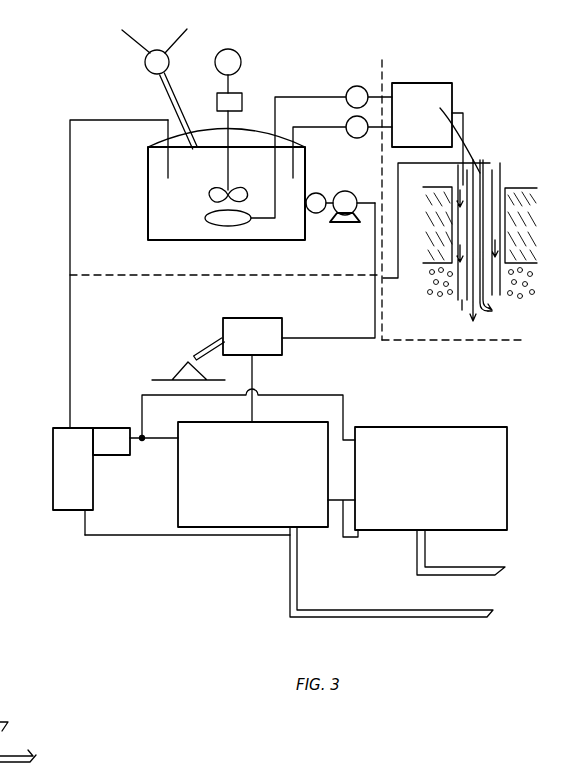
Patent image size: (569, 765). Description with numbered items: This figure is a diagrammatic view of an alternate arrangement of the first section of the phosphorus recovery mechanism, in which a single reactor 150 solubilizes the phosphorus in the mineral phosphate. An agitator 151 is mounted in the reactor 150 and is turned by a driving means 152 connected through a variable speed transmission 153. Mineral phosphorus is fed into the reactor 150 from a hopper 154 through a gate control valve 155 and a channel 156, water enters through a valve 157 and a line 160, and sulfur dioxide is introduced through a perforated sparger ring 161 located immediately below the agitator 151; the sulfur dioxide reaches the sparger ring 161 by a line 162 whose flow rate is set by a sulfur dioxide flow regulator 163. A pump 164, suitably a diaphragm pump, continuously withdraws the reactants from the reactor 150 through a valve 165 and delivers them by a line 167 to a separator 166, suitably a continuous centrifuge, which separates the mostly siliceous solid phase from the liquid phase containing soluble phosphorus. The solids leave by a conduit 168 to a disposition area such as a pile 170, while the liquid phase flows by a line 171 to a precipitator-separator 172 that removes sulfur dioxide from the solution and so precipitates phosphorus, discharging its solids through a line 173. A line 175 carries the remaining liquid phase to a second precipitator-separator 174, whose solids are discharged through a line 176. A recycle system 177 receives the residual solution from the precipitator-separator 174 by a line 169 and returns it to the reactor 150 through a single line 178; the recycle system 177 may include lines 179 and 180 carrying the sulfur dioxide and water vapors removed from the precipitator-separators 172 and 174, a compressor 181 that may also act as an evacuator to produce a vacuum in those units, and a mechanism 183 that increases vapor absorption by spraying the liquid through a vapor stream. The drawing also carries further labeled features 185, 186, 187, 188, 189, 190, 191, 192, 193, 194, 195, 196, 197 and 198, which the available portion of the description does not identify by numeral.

The reactor 150 is at (138, 202).
The agitator 151 is at (213, 192).
The driving means 152 is at (241, 57).
The variable speed transmission 153 is at (232, 108).
The hopper 154 is at (142, 38).
The gate control valve 155 is at (170, 59).
The channel 156 is at (176, 116).
The valve 157 is at (350, 134).
The line 160 is at (297, 120).
The perforated sparger ring 161 is at (205, 223).
The line 162 is at (300, 92).
The sulfur dioxide flow regulator 163 is at (358, 84).
The pump 164 is at (348, 191).
The valve 165 is at (317, 213).
The separator 166 is at (260, 332).
The line 167 is at (378, 326).
The conduit 168 is at (205, 345).
The line 169 is at (110, 534).
The pile 170 is at (180, 379).
The line 171 is at (254, 381).
The precipitator-separator 172 is at (258, 456).
The line 173 is at (335, 611).
The second precipitator-separator 174 is at (432, 476).
The line 175 is at (341, 535).
The line 176 is at (454, 573).
The recycle system 177 is at (73, 523).
The line 178 is at (110, 119).
The line 179 is at (158, 436).
The line 180 is at (343, 395).
The compressor 181 is at (103, 443).
The mechanism 183 is at (68, 452).
The supply unit 185 is at (433, 139).
The line 186 is at (380, 130).
The boundary line 187 is at (384, 93).
The bore hole 188 is at (455, 178).
The pipes 189 is at (476, 168).
The line 190 is at (443, 136).
The formation 191 is at (514, 205).
The gravel 192 is at (522, 280).
The gravel 193 is at (458, 288).
The pipe 194 is at (456, 113).
The pipe end 195 is at (473, 288).
The pipe outlet 196 is at (486, 311).
The formation 197 is at (392, 197).
The boundary line 198 is at (337, 278).